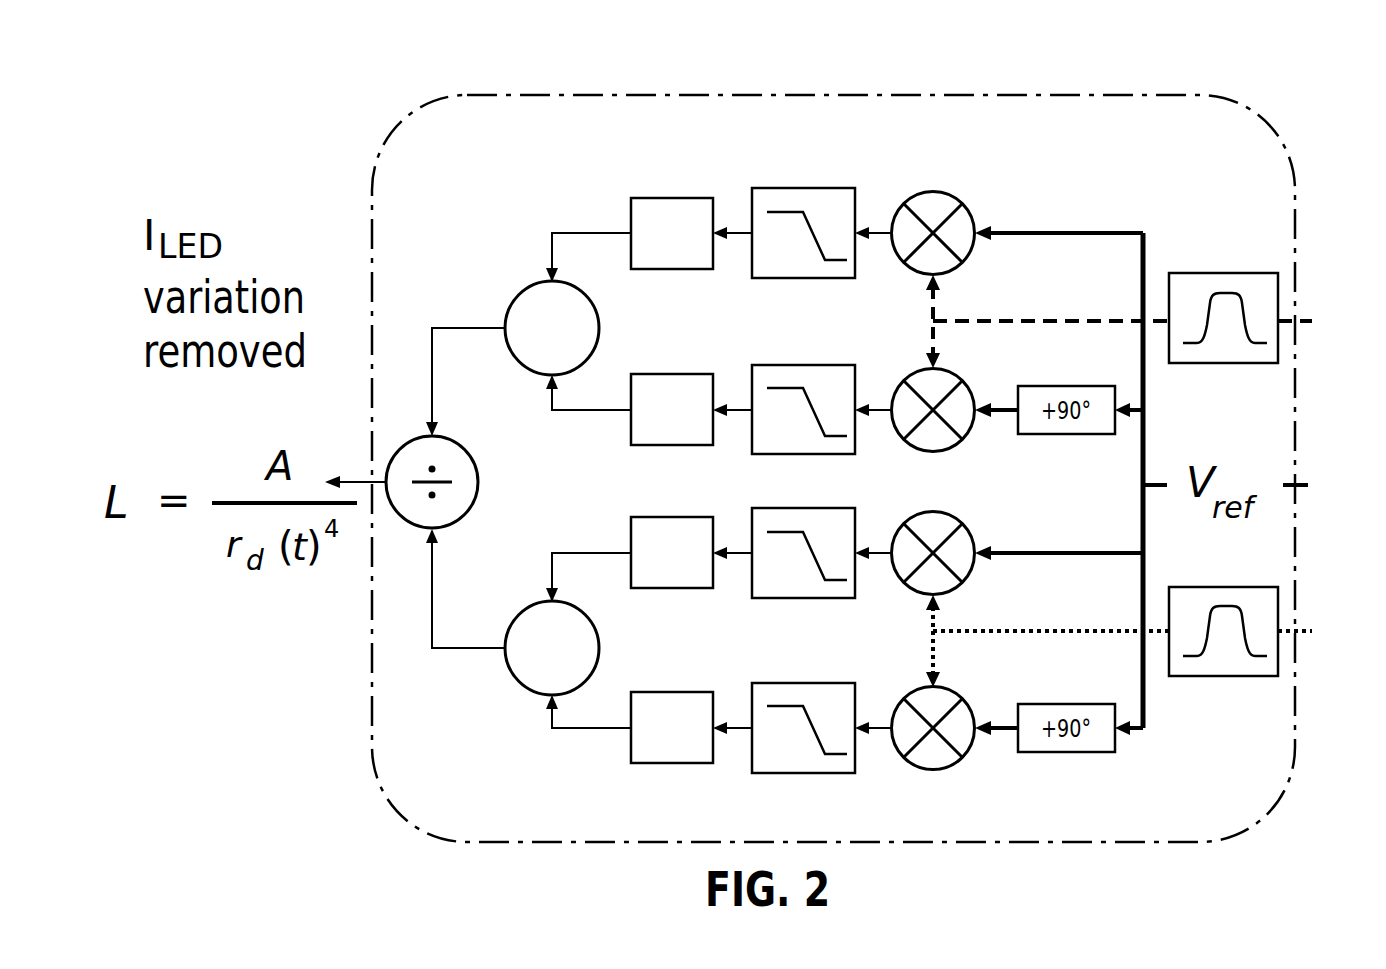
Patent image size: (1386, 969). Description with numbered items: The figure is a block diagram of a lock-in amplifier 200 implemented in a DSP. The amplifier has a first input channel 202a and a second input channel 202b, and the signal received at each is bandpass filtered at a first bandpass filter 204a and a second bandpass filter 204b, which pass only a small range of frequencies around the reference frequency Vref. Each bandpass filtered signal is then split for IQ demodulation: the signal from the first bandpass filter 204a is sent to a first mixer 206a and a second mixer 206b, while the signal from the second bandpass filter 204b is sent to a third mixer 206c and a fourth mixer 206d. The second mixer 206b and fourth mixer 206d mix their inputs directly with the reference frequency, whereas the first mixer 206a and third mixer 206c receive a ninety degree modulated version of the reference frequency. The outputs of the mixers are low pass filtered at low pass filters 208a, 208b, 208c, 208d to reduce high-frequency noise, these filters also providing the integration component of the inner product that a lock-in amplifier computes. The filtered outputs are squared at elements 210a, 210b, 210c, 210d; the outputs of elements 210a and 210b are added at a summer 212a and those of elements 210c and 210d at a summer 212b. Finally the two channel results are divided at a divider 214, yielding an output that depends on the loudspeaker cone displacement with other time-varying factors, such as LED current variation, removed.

The lock-in amplifier 200 is at (280, 108).
The first input channel 202a is at (1305, 630).
The second input channel 202b is at (1305, 320).
The first bandpass filter 204a is at (1183, 676).
The second bandpass filter 204b is at (1178, 363).
The first mixer 206a is at (940, 769).
The second mixer 206b is at (952, 590).
The third mixer 206c is at (940, 451).
The fourth mixer 206d is at (950, 270).
The low pass filter 208a is at (806, 773).
The low pass filter 208b is at (775, 598).
The low pass filter 208c is at (775, 454).
The low pass filter 208d is at (775, 278).
The squaring element 210a is at (662, 763).
The squaring element 210b is at (662, 588).
The squaring element 210c is at (662, 445).
The squaring element 210d is at (662, 269).
The summer 212a is at (516, 681).
The summer 212b is at (522, 298).
The divider 214 is at (478, 467).